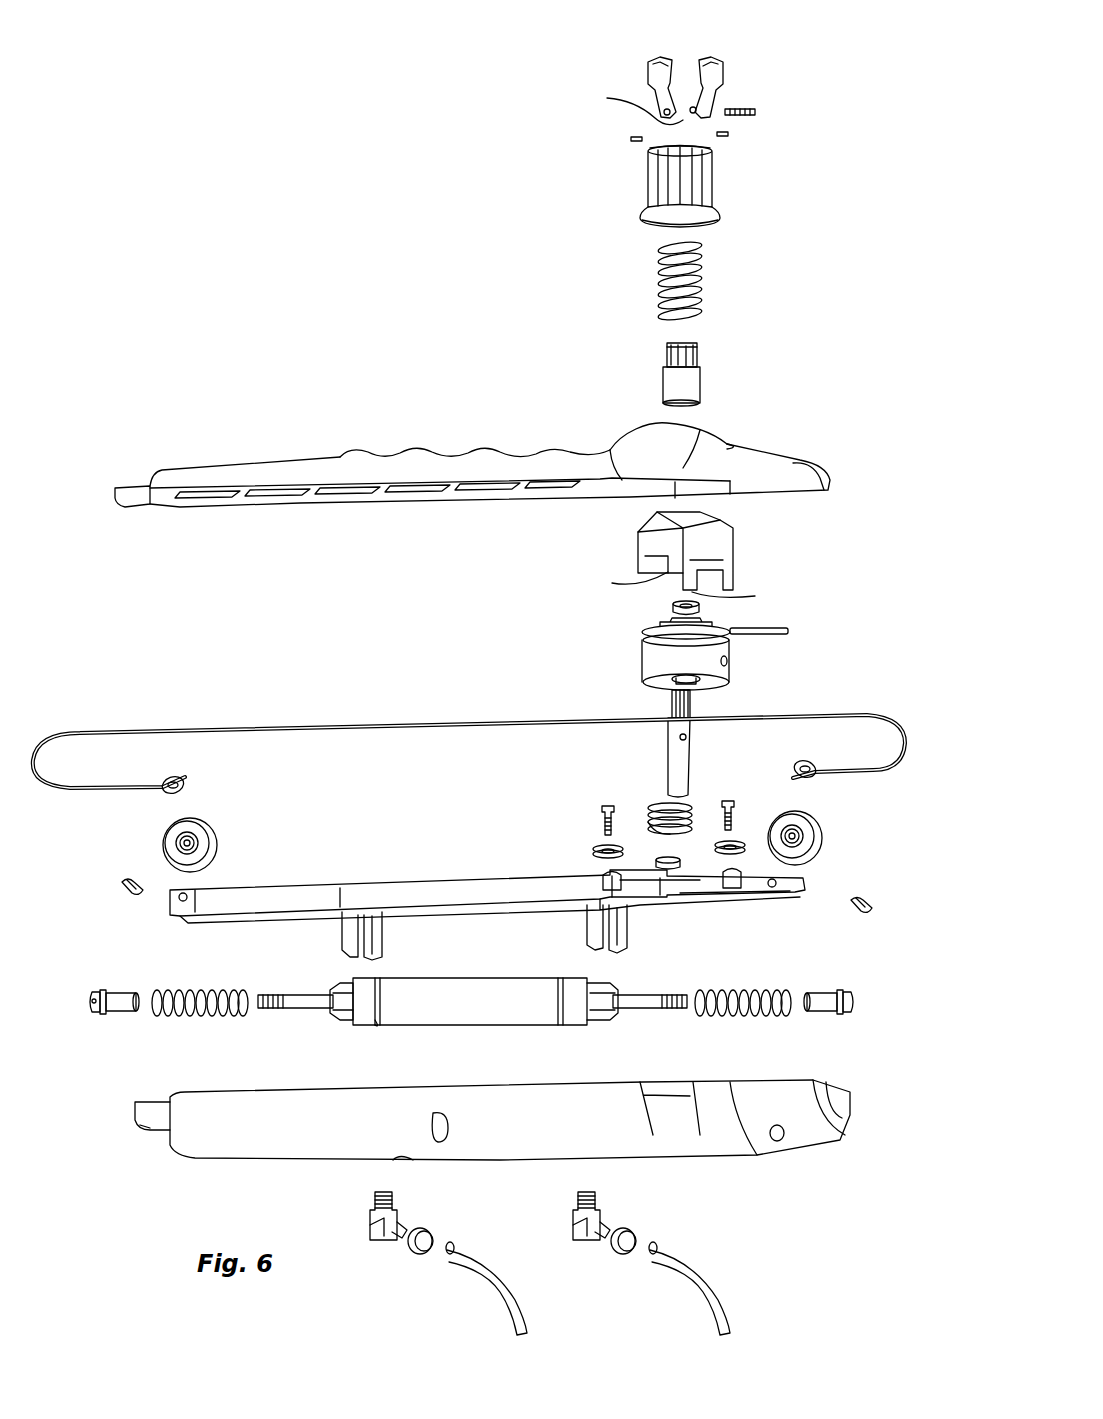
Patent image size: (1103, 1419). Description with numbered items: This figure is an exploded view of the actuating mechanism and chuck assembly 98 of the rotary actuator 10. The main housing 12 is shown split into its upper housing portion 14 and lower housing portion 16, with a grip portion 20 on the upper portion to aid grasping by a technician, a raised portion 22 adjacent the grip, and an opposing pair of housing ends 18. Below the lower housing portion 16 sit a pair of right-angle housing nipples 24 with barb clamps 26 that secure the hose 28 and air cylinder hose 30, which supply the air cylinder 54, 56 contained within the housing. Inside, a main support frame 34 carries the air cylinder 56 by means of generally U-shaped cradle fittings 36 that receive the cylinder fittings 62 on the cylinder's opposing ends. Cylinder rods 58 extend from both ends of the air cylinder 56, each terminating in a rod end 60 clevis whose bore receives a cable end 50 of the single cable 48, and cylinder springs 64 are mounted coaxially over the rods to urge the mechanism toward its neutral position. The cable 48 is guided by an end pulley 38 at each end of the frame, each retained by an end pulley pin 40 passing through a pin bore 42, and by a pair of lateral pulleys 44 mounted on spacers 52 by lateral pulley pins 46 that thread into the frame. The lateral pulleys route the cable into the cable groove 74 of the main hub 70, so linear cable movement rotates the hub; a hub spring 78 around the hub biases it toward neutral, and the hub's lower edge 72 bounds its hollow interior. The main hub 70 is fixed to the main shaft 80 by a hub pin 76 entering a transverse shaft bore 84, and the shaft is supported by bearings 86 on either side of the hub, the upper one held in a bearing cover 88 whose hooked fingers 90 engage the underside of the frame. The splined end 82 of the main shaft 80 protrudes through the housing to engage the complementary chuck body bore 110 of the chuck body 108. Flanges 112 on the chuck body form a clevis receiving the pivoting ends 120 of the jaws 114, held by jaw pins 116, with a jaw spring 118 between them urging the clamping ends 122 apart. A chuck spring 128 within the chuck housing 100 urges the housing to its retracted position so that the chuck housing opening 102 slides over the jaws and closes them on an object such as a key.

The rotary actuator 10 is at (240, 262).
The main housing 12 is at (481, 442).
The upper housing portion 14 is at (247, 488).
The lower housing portion 16 is at (222, 1141).
The housing ends 18 is at (155, 478).
The grip portion 20 is at (373, 453).
The dome 22 is at (695, 425).
The housing nipples 24 is at (370, 1213).
The barb clamps 26 is at (418, 1256).
The tube 28 is at (477, 1265).
The air cylinder hoses 30 is at (680, 1265).
The main support frame 34 is at (482, 897).
The cradle fittings 36 is at (345, 930).
The end pulley 38 is at (818, 832).
The end pulley pin 40 is at (127, 893).
The pin bore 42 is at (180, 901).
The lateral pulleys 44 is at (593, 850).
The lateral pulley pin 46 is at (600, 812).
The cable 48 is at (469, 733).
The cable end 50 is at (183, 778).
The spacers 52 is at (603, 874).
The cylinder 54 is at (424, 1013).
The air cylinder 56 is at (585, 927).
The cylinder rods 58 is at (300, 1010).
The rod end 60 is at (100, 1014).
The cylinder fittings 62 is at (345, 1020).
The cylinder springs 64 is at (745, 1018).
The main hub 70 is at (720, 667).
The lower edge 72 is at (726, 680).
The cable groove 74 is at (648, 634).
The hub pin 76 is at (778, 628).
The hub spring 78 is at (172, 832).
The main shaft 80 is at (654, 740).
The splined end 82 is at (672, 698).
The shaft bore 84 is at (687, 737).
The bearings 86 is at (673, 608).
The bearing cover 88 is at (681, 561).
The fingers 90 is at (681, 590).
The chuck assembly 98 is at (805, 244).
The chuck housing 100 is at (703, 185).
The chuck housing opening 102 is at (703, 145).
The chuck body 108 is at (681, 378).
The chuck body bore 110 is at (675, 405).
The flanges 112 is at (667, 350).
The jaws 114 is at (650, 62).
The jaw pins 116 is at (635, 137).
The jaw spring 118 is at (747, 107).
The pivoting ends 120 is at (640, 96).
The clamping ends 122 is at (699, 62).
The chuck spring 128 is at (658, 285).